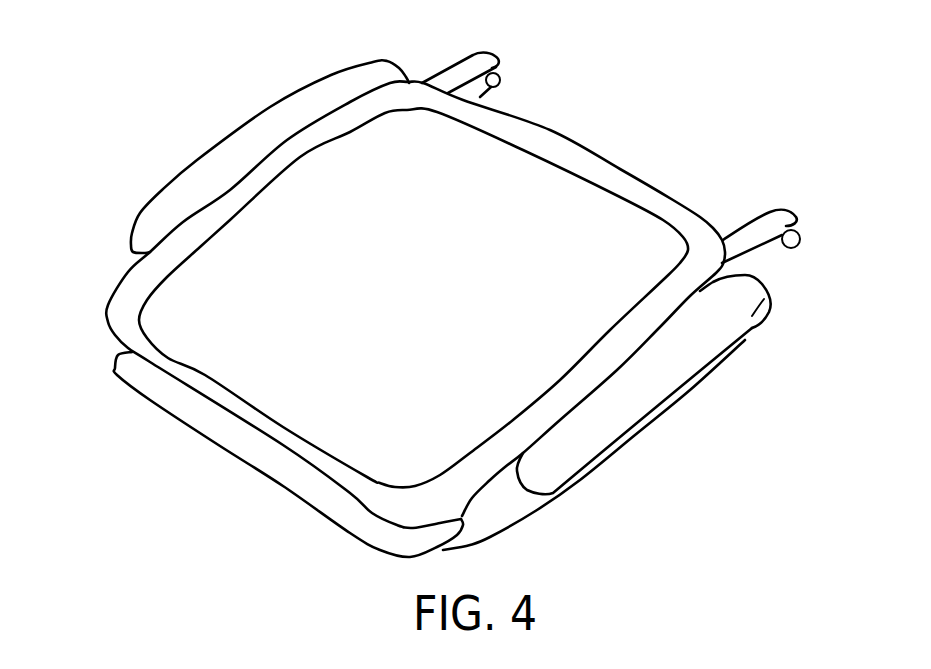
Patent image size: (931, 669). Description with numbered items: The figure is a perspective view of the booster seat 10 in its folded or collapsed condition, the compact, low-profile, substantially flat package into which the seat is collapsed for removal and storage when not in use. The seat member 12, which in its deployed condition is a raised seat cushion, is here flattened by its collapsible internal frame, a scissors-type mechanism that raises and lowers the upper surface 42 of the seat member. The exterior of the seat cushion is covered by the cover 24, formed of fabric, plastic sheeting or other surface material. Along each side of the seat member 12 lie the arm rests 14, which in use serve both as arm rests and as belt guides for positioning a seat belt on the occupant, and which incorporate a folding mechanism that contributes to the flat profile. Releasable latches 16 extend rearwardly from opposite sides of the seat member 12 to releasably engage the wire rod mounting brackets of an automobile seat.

The booster seat 10 is at (137, 428).
The seat member 12 is at (187, 317).
The arm rests 14 is at (378, 78).
The releasable latches 16 is at (475, 68).
The cover 24 is at (410, 294).
The upper surface 42 is at (520, 198).